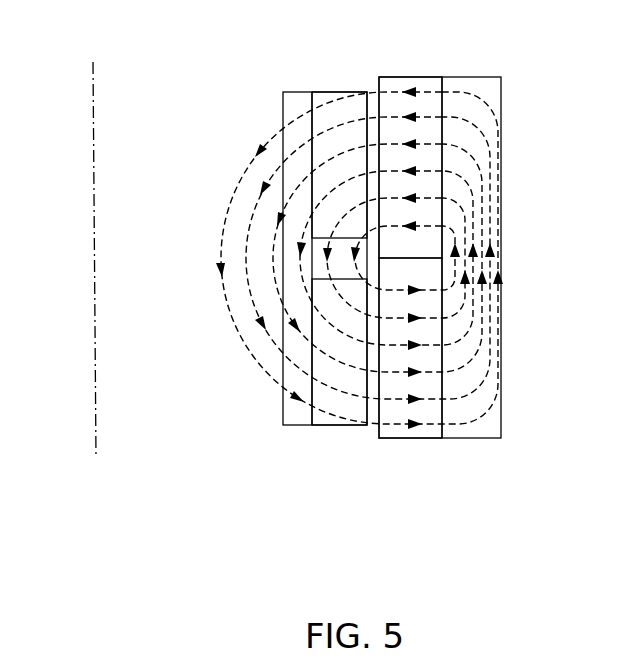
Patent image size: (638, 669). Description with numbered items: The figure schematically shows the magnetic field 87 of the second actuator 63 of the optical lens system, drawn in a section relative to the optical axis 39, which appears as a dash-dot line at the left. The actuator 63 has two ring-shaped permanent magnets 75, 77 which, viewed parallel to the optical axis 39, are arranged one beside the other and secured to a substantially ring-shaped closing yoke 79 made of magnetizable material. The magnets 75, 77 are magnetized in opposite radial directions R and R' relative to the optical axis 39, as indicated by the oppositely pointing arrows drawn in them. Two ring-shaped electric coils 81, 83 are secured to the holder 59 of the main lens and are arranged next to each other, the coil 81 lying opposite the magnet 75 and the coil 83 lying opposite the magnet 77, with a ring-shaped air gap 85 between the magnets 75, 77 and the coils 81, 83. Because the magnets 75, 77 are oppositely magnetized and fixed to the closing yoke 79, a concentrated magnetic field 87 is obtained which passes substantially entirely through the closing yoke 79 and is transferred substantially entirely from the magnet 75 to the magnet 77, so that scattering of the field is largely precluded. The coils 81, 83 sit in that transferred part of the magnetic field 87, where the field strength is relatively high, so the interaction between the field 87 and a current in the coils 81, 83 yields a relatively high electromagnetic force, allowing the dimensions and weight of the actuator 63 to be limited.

The optical axis 39 is at (92, 101).
The holder 59 is at (297, 384).
The second actuator 63 is at (565, 310).
The permanent magnet 75 is at (397, 80).
The permanent magnet 77 is at (427, 432).
The closing yoke 79 is at (495, 426).
The electric coil 81 is at (315, 92).
The electric coil 83 is at (321, 426).
The air gap 85 is at (371, 97).
The magnetic field 87 is at (217, 223).